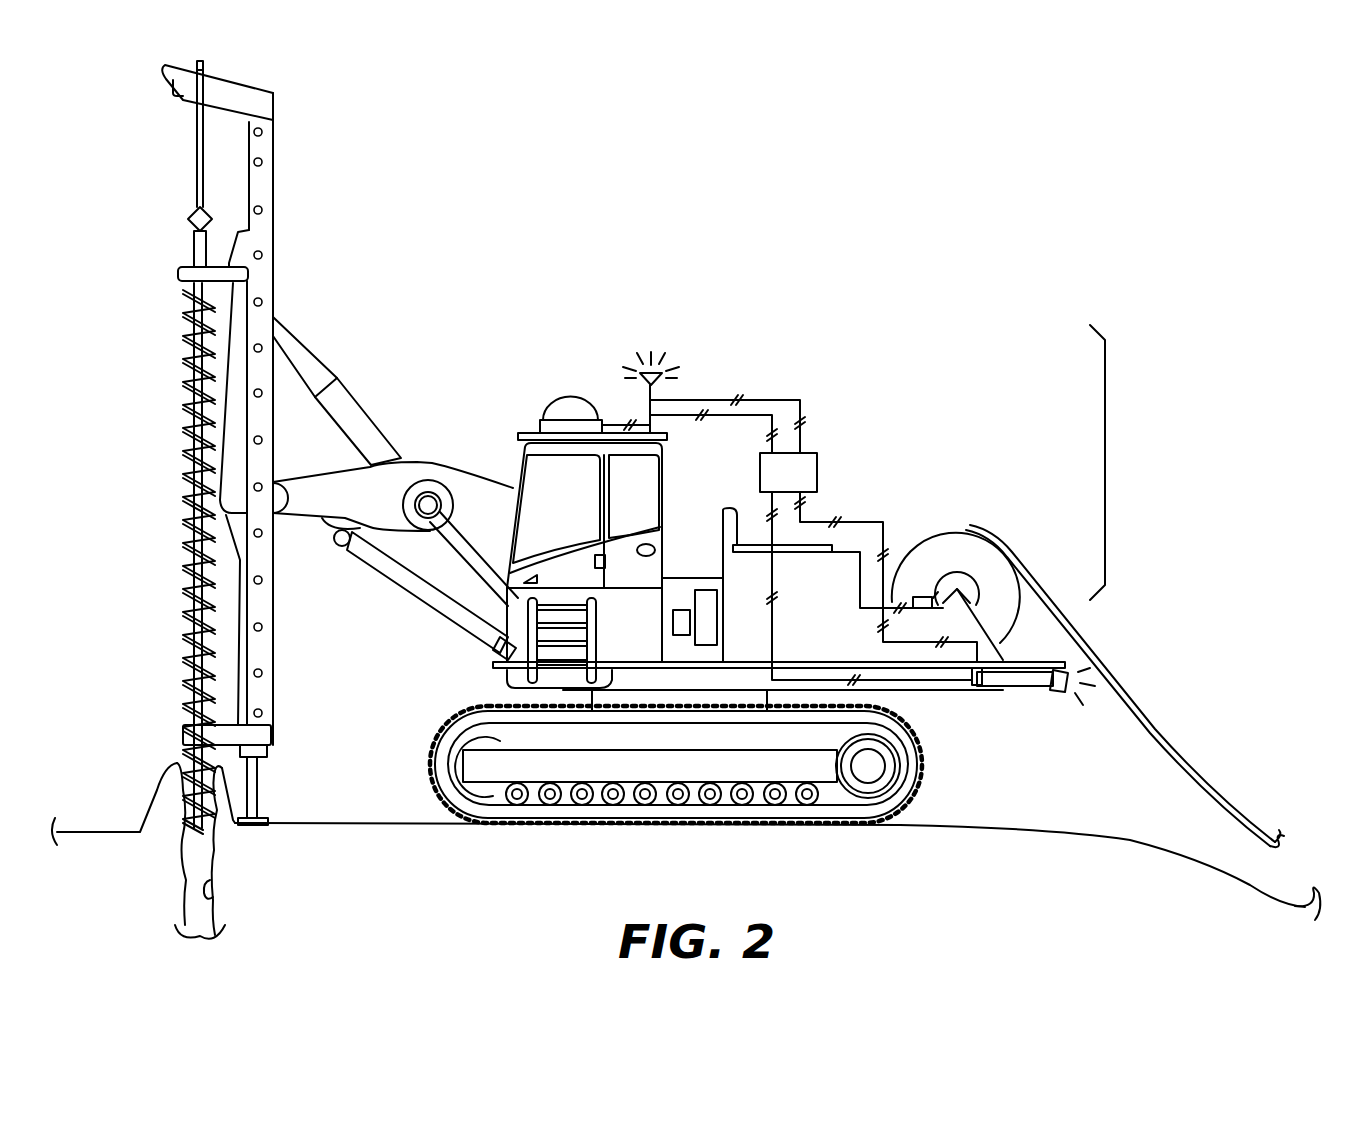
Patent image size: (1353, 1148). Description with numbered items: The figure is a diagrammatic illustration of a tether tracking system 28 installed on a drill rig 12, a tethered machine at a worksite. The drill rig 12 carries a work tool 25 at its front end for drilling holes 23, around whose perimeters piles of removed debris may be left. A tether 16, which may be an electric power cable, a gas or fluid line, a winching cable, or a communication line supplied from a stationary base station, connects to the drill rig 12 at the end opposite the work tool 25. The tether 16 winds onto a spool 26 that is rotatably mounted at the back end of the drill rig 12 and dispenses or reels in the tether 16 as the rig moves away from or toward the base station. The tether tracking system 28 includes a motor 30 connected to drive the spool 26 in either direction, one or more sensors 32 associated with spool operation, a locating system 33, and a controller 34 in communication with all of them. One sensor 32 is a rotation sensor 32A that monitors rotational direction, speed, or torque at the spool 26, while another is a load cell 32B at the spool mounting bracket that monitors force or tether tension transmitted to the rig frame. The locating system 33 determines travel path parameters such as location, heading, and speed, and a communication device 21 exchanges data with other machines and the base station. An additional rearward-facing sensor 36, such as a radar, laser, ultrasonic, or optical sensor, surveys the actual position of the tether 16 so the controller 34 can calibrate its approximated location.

The drill rig 12 is at (917, 434).
The tether 16 is at (1153, 734).
The communication device 21 is at (652, 390).
The holes 23 is at (213, 899).
The work tool 25 is at (188, 653).
The spool 26 is at (970, 538).
The tether tracking system 28 is at (1105, 453).
The motor 30 is at (977, 583).
The sensors 32 is at (916, 576).
The rotation sensor 32A is at (933, 598).
The load cell 32B is at (982, 686).
The locating system 33 is at (541, 411).
The controller 34 is at (800, 483).
The sensor 36 is at (1058, 698).